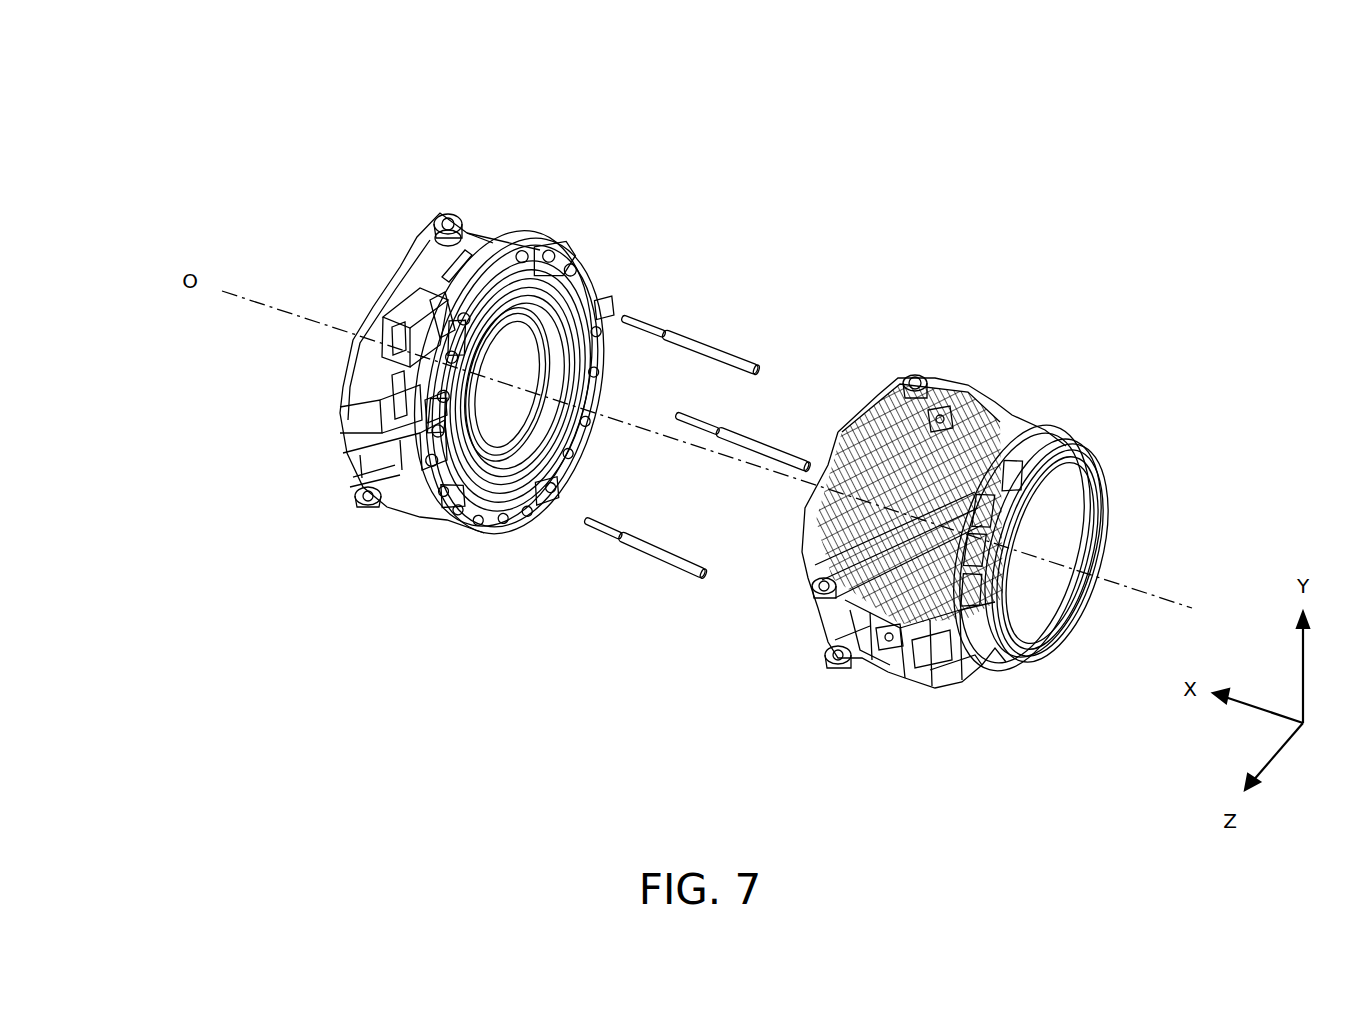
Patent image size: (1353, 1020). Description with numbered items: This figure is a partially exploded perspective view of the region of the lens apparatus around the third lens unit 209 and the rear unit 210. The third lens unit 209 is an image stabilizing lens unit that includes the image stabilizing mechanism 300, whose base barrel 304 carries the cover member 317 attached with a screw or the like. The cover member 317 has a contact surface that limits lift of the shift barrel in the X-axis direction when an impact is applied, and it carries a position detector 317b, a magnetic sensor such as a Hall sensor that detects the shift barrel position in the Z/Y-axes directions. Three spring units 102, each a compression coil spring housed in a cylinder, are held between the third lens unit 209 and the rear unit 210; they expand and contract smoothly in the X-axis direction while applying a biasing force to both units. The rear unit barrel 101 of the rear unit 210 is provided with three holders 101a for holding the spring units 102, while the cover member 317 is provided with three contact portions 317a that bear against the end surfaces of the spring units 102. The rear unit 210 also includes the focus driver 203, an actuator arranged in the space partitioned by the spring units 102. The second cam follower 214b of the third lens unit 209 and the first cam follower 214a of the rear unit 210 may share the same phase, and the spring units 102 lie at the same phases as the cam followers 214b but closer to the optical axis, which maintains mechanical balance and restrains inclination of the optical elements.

The third lens unit 209 is at (500, 62).
The image stabilizing mechanism 300 is at (505, 193).
The base barrel 304 is at (410, 240).
The cover member 317 is at (483, 511).
The contact portions 317a is at (577, 410).
The position detector 317b is at (455, 465).
The spring unit 102 is at (640, 540).
The rear unit 210 is at (988, 168).
The rear unit barrel 101 is at (1007, 397).
The holders 101a is at (937, 417).
The focus driver 203 is at (987, 653).
The first cam follower 214a is at (823, 590).
The second cam follower 214b is at (437, 230).